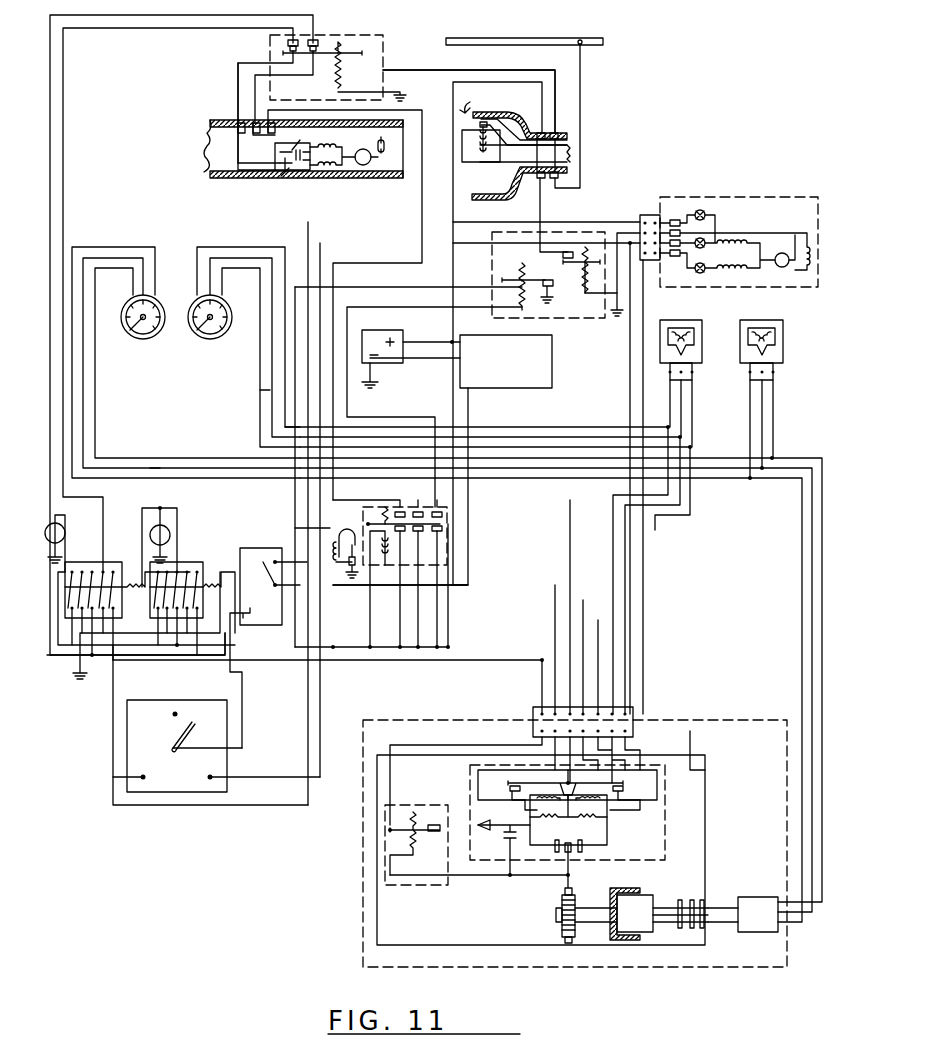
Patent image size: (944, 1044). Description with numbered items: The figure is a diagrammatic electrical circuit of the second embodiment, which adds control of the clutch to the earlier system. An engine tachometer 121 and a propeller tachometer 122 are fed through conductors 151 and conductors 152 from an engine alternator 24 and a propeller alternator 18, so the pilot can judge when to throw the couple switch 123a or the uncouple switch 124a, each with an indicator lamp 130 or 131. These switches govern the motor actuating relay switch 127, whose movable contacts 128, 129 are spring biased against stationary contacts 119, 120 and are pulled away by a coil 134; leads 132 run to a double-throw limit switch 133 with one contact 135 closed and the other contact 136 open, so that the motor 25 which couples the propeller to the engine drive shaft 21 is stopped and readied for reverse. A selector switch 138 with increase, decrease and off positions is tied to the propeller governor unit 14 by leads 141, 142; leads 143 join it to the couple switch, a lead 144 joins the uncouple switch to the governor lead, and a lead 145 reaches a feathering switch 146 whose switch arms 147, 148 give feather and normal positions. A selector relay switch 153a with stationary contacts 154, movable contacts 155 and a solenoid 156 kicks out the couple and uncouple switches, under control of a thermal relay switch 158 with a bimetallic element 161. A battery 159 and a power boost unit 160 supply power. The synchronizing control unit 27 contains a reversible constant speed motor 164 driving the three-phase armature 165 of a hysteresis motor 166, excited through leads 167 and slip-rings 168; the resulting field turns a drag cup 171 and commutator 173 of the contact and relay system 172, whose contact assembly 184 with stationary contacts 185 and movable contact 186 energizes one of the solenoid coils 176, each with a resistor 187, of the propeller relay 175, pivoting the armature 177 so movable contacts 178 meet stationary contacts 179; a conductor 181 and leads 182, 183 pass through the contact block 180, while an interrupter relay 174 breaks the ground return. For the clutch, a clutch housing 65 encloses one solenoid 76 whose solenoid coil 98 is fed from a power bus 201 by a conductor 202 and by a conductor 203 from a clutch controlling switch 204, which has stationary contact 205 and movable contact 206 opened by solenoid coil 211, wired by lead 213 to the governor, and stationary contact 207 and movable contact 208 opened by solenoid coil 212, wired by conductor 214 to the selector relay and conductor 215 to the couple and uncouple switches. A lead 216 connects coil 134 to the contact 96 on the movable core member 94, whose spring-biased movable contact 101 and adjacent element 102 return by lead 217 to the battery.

The stationary contact 119 is at (287, 47).
The stationary contact 120 is at (318, 42).
The motor actuating relay switch 127 is at (383, 46).
The leads 132 is at (238, 78).
The movable contact 128 is at (296, 66).
The movable contact 129 is at (313, 75).
The coil 134 is at (340, 78).
The engine drive shaft 21 is at (235, 183).
The double-throw limit switch 133 is at (275, 170).
The contact 135 is at (290, 176).
The contact 136 is at (315, 132).
The motor 25 is at (363, 165).
The power bus 201 is at (512, 35).
The lead 216 is at (450, 70).
The lead 217 is at (453, 92).
The conductor 202 is at (580, 83).
The solenoid 76 is at (469, 100).
The movable contact 101 is at (488, 112).
The conduit 102 is at (505, 110).
The contact 96 is at (478, 124).
The solenoid coil 98 is at (475, 141).
The movable core member 94 is at (483, 162).
The clutch housing 65 is at (498, 194).
The conductor 203 is at (540, 205).
The stationary contact 205 is at (585, 247).
The lead 213 is at (628, 233).
The propeller governor unit 14 is at (725, 193).
The clutch controlling switch 204 is at (486, 273).
The stationary contact 207 is at (540, 270).
The movable contact 206 is at (558, 262).
The movable contact 208 is at (582, 290).
The solenoid coil 211 is at (588, 282).
The solenoid coil 212 is at (527, 300).
The conductor 215 is at (395, 287).
The conductor 214 is at (395, 307).
The battery 159 is at (378, 328).
The power boost unit 160 is at (552, 355).
The engine tachometer 121 is at (125, 338).
The propeller tachometer 122 is at (192, 338).
The conductors 152 is at (282, 378).
The conductors 151 is at (150, 478).
The propeller alternator 18 is at (690, 316).
The engine alternator 24 is at (770, 316).
The indicator lamp 130 is at (68, 518).
The indicator lamp 131 is at (162, 522).
The couple switch 123a is at (117, 558).
The uncouple switch 124a is at (197, 558).
The feathering switch 146 is at (280, 546).
The switch arm 147 is at (266, 576).
The switch arm 148 is at (250, 605).
The bimetallic element 161 is at (306, 526).
The thermal relay switch 158 is at (348, 521).
The selector relay switch 153a is at (447, 510).
The stationary contacts 154 is at (445, 517).
The movable contacts 155 is at (440, 526).
The solenoid 156 is at (390, 545).
The lead 144 is at (226, 656).
The leads 143 is at (113, 690).
The lead 145 is at (242, 710).
The selector switch 138 is at (118, 768).
The lead 141 is at (248, 777).
The lead 142 is at (248, 805).
The conductor 181 is at (483, 660).
The contact block 180 is at (633, 714).
The lead 182 is at (478, 783).
The movable contacts 178 is at (505, 786).
The stationary contacts 179 is at (508, 793).
The leads 167 is at (705, 772).
The resistor 187 is at (530, 808).
The solenoid coils 176 is at (605, 808).
The armature 177 is at (575, 820).
The lead 183 is at (650, 800).
The stationary contacts 185 is at (556, 838).
The movable contact 186 is at (564, 850).
The contact assembly 184 is at (580, 850).
The propeller relay 175 is at (605, 865).
The interrupter relay 174 is at (432, 886).
The contact and relay system 172 is at (490, 915).
The drag cup 171 is at (640, 888).
The commutator 173 is at (554, 918).
The hysteresis motor 166 is at (610, 938).
The three-phase armature 165 is at (648, 932).
The slip-rings 168 is at (685, 928).
The reversible constant speed motor 164 is at (765, 887).
The synchronizing control unit 27 is at (414, 969).